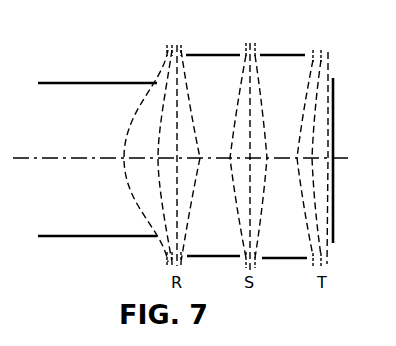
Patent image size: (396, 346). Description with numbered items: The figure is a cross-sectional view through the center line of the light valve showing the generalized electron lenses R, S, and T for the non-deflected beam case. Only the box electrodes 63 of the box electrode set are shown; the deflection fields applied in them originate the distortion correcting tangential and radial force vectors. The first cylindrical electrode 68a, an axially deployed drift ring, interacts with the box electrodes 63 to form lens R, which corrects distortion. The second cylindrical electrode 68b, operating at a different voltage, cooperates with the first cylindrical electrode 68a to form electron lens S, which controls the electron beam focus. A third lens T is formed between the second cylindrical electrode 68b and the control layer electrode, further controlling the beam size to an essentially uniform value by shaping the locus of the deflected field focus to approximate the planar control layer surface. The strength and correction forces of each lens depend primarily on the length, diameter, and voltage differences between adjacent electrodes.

The box electrodes 63 is at (98, 80).
The first cylindrical electrode 68a is at (221, 42).
The second cylindrical electrode 68b is at (278, 54).